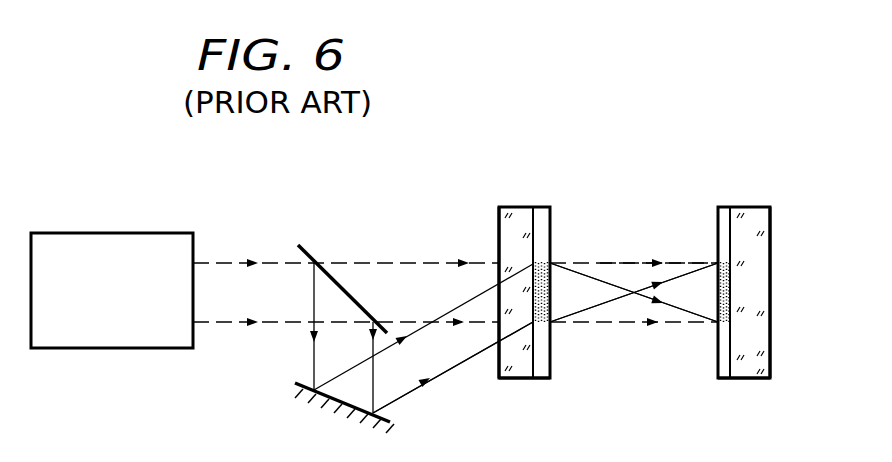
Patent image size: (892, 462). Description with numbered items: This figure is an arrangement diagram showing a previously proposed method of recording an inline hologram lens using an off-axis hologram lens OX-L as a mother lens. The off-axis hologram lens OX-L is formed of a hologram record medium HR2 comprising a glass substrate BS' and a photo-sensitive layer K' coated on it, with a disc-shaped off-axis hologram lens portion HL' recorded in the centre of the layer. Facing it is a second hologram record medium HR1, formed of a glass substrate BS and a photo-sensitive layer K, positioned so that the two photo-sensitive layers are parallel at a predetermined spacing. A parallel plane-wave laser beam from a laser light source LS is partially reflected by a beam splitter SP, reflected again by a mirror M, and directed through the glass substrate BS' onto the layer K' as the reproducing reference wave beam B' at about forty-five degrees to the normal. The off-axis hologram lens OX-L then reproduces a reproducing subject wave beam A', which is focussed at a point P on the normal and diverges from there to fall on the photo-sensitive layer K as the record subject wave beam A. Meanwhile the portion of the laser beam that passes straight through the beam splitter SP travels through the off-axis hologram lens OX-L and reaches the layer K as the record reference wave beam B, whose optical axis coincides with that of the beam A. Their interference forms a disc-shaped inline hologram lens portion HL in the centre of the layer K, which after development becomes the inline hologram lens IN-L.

The laser light source LS is at (133, 349).
The beam splitter SP is at (312, 257).
The mirror M is at (392, 423).
The hologram record medium HR2 is at (563, 127).
The glass substrate BS' is at (506, 256).
The photo-sensitive layer K' is at (557, 256).
The off-axis hologram lens OX-L is at (606, 437).
The hologram record medium HR1 is at (767, 139).
The photo-sensitive layer K is at (698, 256).
The glass substrate BS is at (744, 256).
The inline hologram lens IN-L is at (747, 380).
The reproducing subject wave beam A' is at (592, 250).
The record reference wave beam B is at (659, 237).
The point P is at (634, 300).
The record subject wave beam A is at (676, 331).
The off-axis hologram lens portion HL' is at (592, 349).
The inline hologram lens portion HL is at (676, 335).
The reproducing reference wave beam B' is at (453, 367).